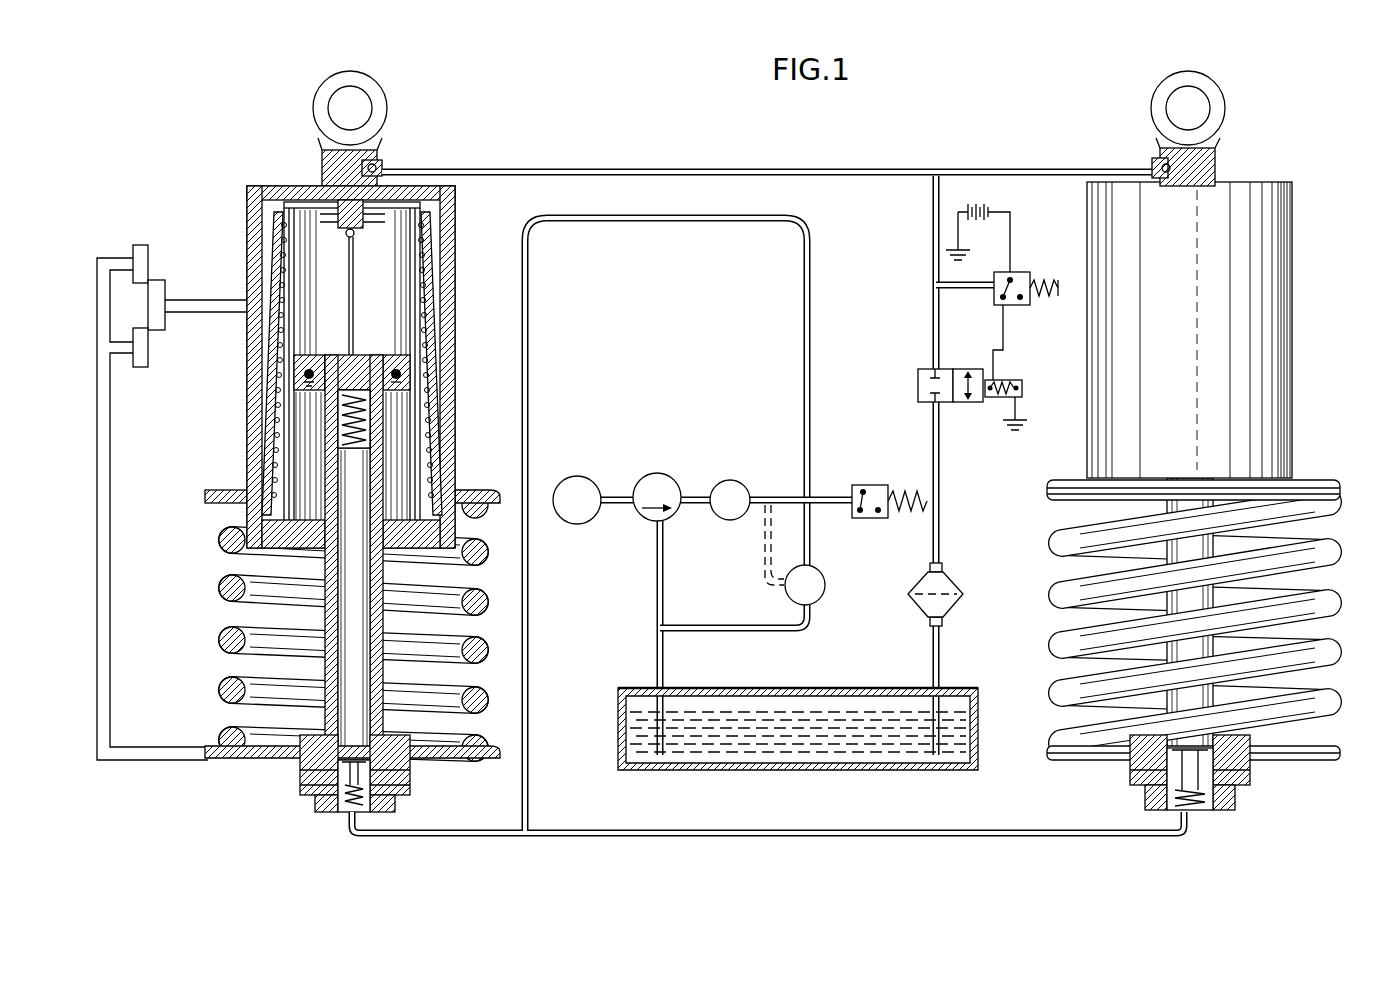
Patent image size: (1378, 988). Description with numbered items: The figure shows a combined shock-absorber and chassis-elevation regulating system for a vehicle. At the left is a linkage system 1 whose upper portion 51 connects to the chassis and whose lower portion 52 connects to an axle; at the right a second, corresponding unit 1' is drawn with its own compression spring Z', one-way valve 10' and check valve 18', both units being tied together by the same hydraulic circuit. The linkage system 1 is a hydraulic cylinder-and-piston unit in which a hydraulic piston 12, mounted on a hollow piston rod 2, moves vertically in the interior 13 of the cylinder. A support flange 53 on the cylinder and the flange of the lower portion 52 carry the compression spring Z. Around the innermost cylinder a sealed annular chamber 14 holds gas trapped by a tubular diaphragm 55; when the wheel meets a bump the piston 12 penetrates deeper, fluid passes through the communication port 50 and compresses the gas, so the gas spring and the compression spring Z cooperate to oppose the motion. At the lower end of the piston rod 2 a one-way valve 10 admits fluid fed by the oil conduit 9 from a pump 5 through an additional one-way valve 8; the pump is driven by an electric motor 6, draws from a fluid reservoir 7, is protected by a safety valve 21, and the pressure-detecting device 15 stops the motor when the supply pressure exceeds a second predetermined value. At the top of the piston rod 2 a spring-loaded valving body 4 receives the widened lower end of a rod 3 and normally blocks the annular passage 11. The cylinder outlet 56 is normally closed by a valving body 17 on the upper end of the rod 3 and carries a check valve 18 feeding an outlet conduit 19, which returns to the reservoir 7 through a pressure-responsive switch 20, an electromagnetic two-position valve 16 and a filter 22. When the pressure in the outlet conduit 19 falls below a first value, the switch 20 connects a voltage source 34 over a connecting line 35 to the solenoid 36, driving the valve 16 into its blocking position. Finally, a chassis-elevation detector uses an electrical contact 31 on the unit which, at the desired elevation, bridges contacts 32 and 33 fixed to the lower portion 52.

The linkage system 1 is at (304, 459).
The second shock absorber 1' is at (1212, 463).
The piston rod 2 is at (378, 678).
The rod 3 is at (349, 272).
The valving body 4 is at (372, 405).
The pump 5 is at (672, 515).
The electric motor 6 is at (574, 477).
The fluid reservoir 7 is at (790, 760).
The one-way valve 8 is at (742, 487).
The oil conduit 9 is at (529, 690).
The one-way valve 10 is at (355, 796).
The lower mounting hub of second shock absorber 10' is at (1200, 795).
The annular passage 11 is at (356, 356).
The hydraulic piston 12 is at (410, 365).
The interior of the cylinder 13 is at (412, 292).
The sealed annular chamber 14 is at (268, 342).
The pressure-detecting device 15 is at (874, 487).
The electromagnetic two-position valve 16 is at (958, 402).
The valving body 17 is at (360, 225).
The check valve 18 is at (401, 146).
The upper connection fitting of second shock absorber 18' is at (1135, 147).
The outlet conduit 19 is at (672, 168).
The pressure-responsive switch 20 is at (1018, 272).
The safety valve 21 is at (825, 583).
The filter 22 is at (950, 600).
The electrical contact 31 is at (166, 297).
The electrical contact 32 is at (146, 350).
The electrical contact 33 is at (141, 258).
The voltage source 34 is at (990, 206).
The connecting line 35 is at (1000, 318).
The solenoid 36 is at (1015, 380).
The communication port 50 is at (262, 200).
The upper portion 51 is at (376, 100).
The lower portion 52 is at (455, 760).
The support flange 53 is at (237, 490).
The tubular diaphragm 55 is at (265, 275).
The outlet 56 is at (323, 163).
The compression spring Z is at (329, 626).
The coil spring of second shock absorber Z' is at (1220, 613).